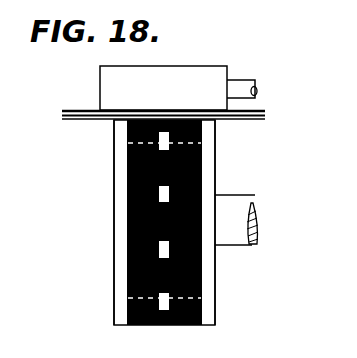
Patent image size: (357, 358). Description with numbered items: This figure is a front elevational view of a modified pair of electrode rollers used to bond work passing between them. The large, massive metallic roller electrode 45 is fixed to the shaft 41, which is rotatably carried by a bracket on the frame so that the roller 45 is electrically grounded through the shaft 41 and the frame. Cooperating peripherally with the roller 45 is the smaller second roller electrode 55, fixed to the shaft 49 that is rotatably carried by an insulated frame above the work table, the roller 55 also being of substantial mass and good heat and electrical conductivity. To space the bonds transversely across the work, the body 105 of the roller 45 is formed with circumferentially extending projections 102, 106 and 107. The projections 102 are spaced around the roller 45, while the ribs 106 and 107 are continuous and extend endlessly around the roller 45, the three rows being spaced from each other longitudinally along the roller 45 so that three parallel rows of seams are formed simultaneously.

The shaft 41 is at (245, 208).
The roller electrode 45 is at (114, 175).
The shaft 49 is at (245, 88).
The second roller electrode 55 is at (210, 71).
The projections 102 is at (166, 193).
The strip 105 is at (130, 229).
The projection or rib 106 is at (122, 308).
The projection or rib 107 is at (215, 313).